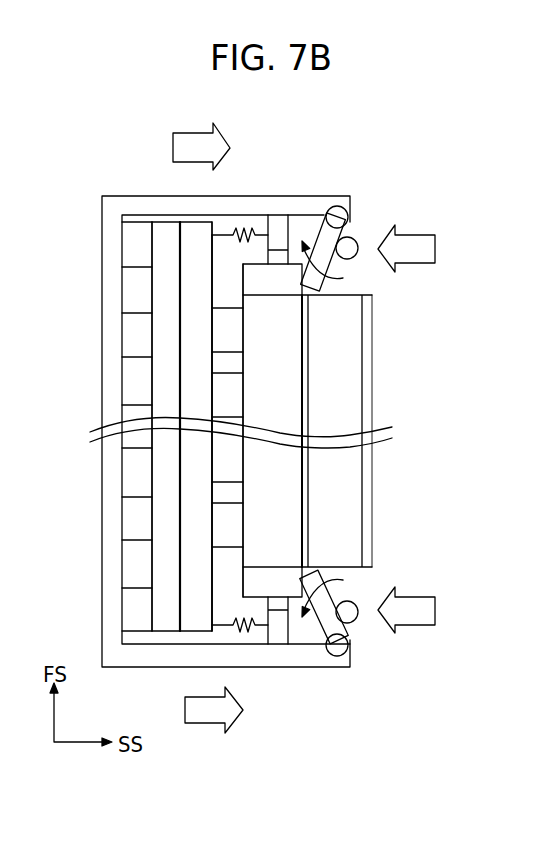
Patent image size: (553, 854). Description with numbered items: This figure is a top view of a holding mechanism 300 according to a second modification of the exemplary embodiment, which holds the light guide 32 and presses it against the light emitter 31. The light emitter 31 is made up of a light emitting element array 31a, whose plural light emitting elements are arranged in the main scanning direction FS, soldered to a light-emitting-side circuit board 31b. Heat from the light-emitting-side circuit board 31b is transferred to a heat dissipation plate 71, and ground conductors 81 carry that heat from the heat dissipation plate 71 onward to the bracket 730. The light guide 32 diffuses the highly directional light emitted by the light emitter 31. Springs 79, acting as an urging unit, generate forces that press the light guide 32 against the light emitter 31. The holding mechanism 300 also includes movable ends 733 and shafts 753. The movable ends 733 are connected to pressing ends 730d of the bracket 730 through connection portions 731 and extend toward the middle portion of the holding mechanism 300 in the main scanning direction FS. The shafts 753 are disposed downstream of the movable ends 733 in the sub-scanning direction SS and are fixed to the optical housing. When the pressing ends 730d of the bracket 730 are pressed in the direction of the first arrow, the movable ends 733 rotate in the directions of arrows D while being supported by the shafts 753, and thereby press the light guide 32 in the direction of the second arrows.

The holding mechanism 300 is at (442, 144).
The bracket 730 is at (123, 188).
The pressing ends 730d is at (264, 213).
The springs 79 is at (257, 234).
The movable ends 733 is at (322, 258).
The connection portions 731 is at (340, 207).
The shafts 753 is at (356, 240).
The light guide 32 is at (384, 471).
The light emitter 31 is at (40, 296).
The light emitting element array 31a is at (217, 338).
The light-emitting-side circuit board 31b is at (190, 312).
The heat dissipation plate 71 is at (163, 280).
The ground conductors 81 is at (137, 522).